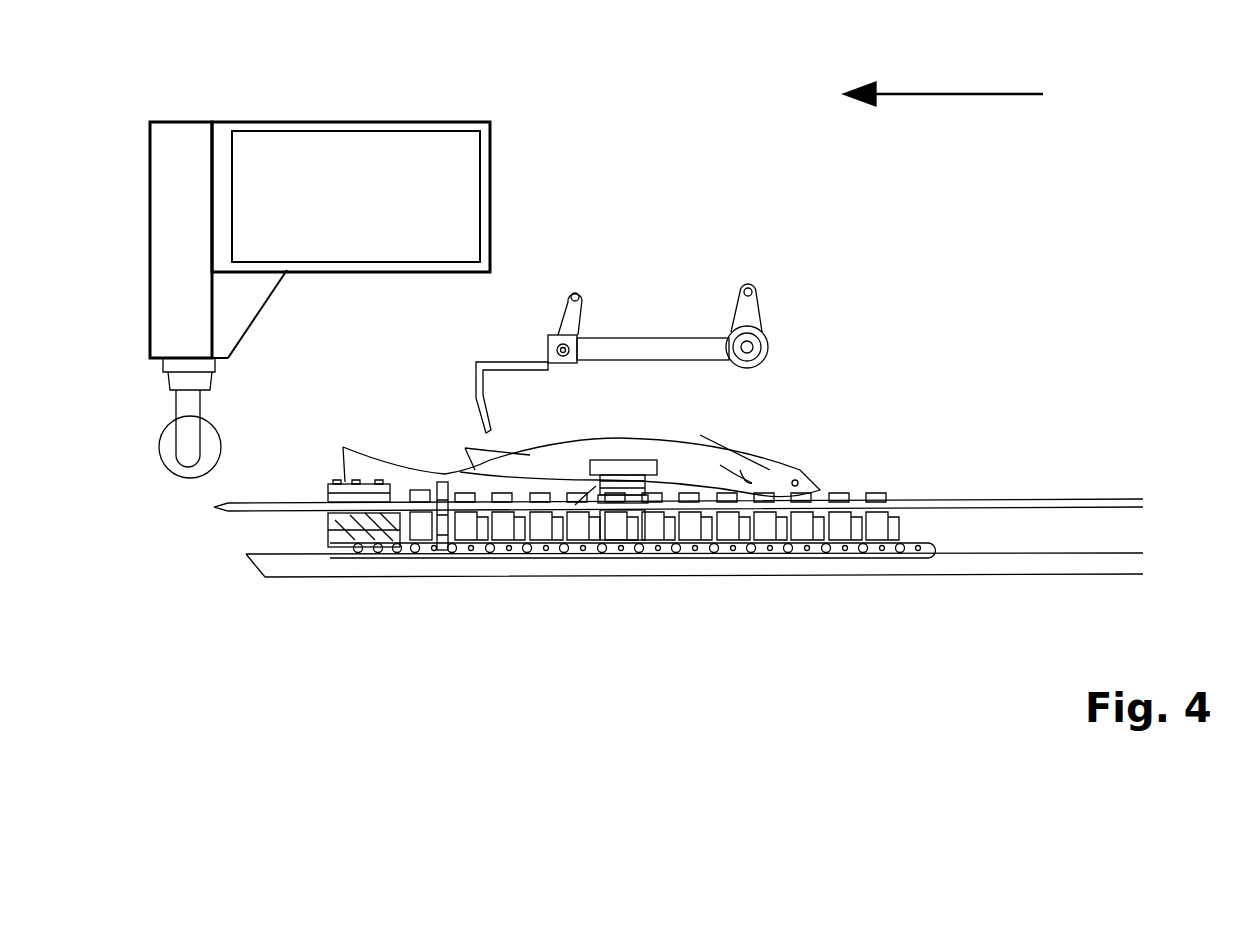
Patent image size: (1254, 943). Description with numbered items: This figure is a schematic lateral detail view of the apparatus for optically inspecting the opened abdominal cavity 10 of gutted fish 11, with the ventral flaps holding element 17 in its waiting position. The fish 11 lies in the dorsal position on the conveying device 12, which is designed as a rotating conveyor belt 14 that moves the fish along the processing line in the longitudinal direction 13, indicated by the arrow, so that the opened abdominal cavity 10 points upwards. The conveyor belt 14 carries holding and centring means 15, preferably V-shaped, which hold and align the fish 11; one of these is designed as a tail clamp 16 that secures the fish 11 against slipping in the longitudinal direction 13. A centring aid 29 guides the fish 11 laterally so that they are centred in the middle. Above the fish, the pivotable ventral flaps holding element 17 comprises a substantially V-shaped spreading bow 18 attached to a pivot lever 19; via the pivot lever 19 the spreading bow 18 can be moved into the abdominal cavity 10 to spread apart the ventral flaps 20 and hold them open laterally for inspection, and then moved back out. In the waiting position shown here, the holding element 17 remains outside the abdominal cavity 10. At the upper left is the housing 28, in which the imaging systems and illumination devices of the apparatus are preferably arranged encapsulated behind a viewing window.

The opened abdominal cavity 10 is at (657, 431).
The gutted fish 11 is at (752, 483).
The conveying device 12 is at (946, 476).
The longitudinal direction 13 is at (955, 94).
The conveyor belt 14 is at (622, 543).
The holding and centring means 15 is at (525, 545).
The tail clamp 16 is at (434, 550).
The ventral flaps holding element 17 is at (607, 268).
The spreading bow 18 is at (473, 410).
The pivot lever 19 is at (708, 330).
The ventral flaps 20 is at (697, 540).
The housing 28 is at (490, 187).
The centring aid 29 is at (598, 487).